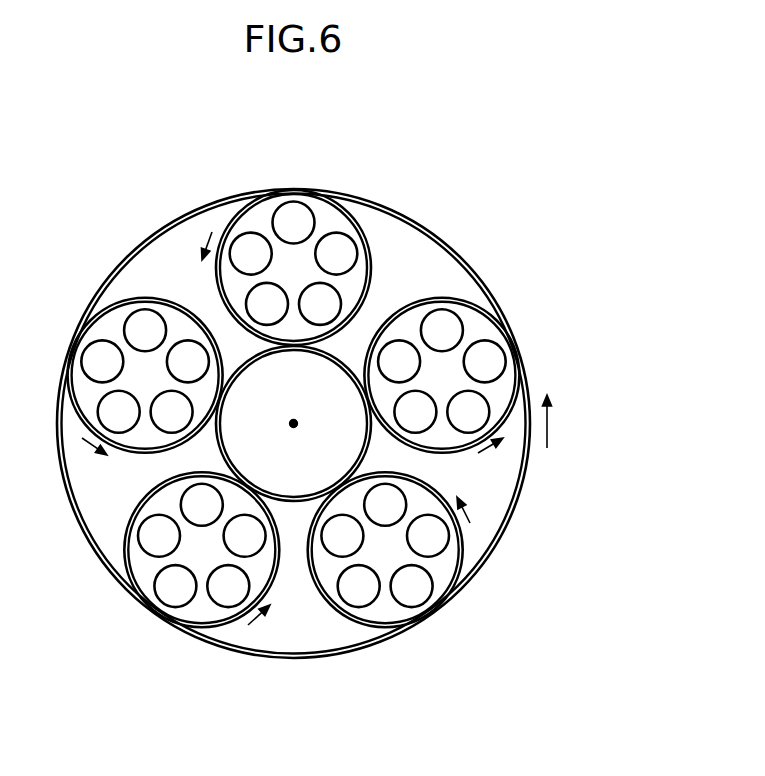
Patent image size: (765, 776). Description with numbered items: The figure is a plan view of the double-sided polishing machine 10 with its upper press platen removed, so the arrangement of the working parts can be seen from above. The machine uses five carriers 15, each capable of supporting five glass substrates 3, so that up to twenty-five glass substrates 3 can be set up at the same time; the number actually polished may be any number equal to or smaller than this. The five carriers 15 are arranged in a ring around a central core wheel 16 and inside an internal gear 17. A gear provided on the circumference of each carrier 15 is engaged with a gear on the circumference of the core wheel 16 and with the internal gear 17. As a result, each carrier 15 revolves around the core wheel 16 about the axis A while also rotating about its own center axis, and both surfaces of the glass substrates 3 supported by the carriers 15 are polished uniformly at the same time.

The glass substrate 3 is at (294, 222).
The double-sided polishing machine 10 is at (402, 182).
The carrier 15 is at (325, 226).
The core wheel 16 is at (308, 402).
The internal gear 17 is at (474, 263).
The axis A is at (291, 432).